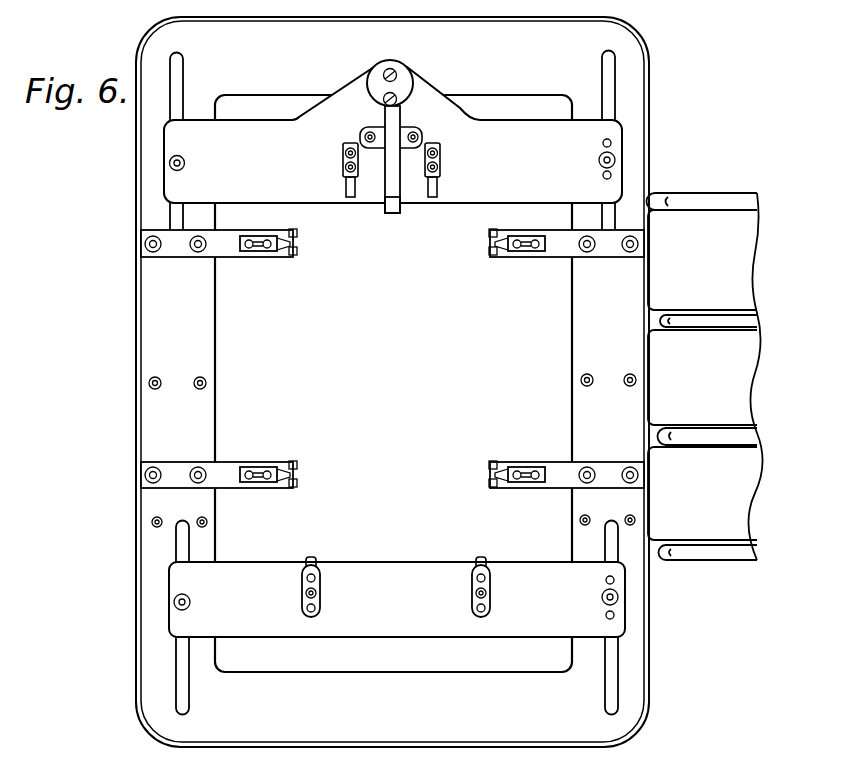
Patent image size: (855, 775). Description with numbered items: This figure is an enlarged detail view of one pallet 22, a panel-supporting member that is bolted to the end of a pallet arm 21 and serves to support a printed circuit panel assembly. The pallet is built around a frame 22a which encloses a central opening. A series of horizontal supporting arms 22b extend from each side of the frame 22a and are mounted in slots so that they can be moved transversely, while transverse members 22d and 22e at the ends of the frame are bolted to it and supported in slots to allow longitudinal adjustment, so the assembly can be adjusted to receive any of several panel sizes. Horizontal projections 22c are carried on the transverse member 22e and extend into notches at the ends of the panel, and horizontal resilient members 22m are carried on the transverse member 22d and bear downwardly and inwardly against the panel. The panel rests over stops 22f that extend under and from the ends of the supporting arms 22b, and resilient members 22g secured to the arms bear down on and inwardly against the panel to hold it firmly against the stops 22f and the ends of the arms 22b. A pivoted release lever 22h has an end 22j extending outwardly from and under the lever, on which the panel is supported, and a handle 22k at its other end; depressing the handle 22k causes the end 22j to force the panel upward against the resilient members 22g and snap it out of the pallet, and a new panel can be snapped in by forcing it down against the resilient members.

The pallet arm 21 is at (705, 562).
The pallet 22 is at (450, 722).
The frame 22a is at (160, 337).
The horizontal supporting arm 22b is at (277, 258).
The horizontal projection 22c is at (312, 560).
The transverse member 22d is at (512, 128).
The transverse member 22e is at (252, 572).
The stop 22f is at (298, 233).
The resilient member 22g is at (297, 256).
The pivoted release lever 22h is at (402, 112).
The lever end 22j is at (392, 214).
The handle 22k is at (384, 72).
The horizontal resilient member 22m is at (343, 196).